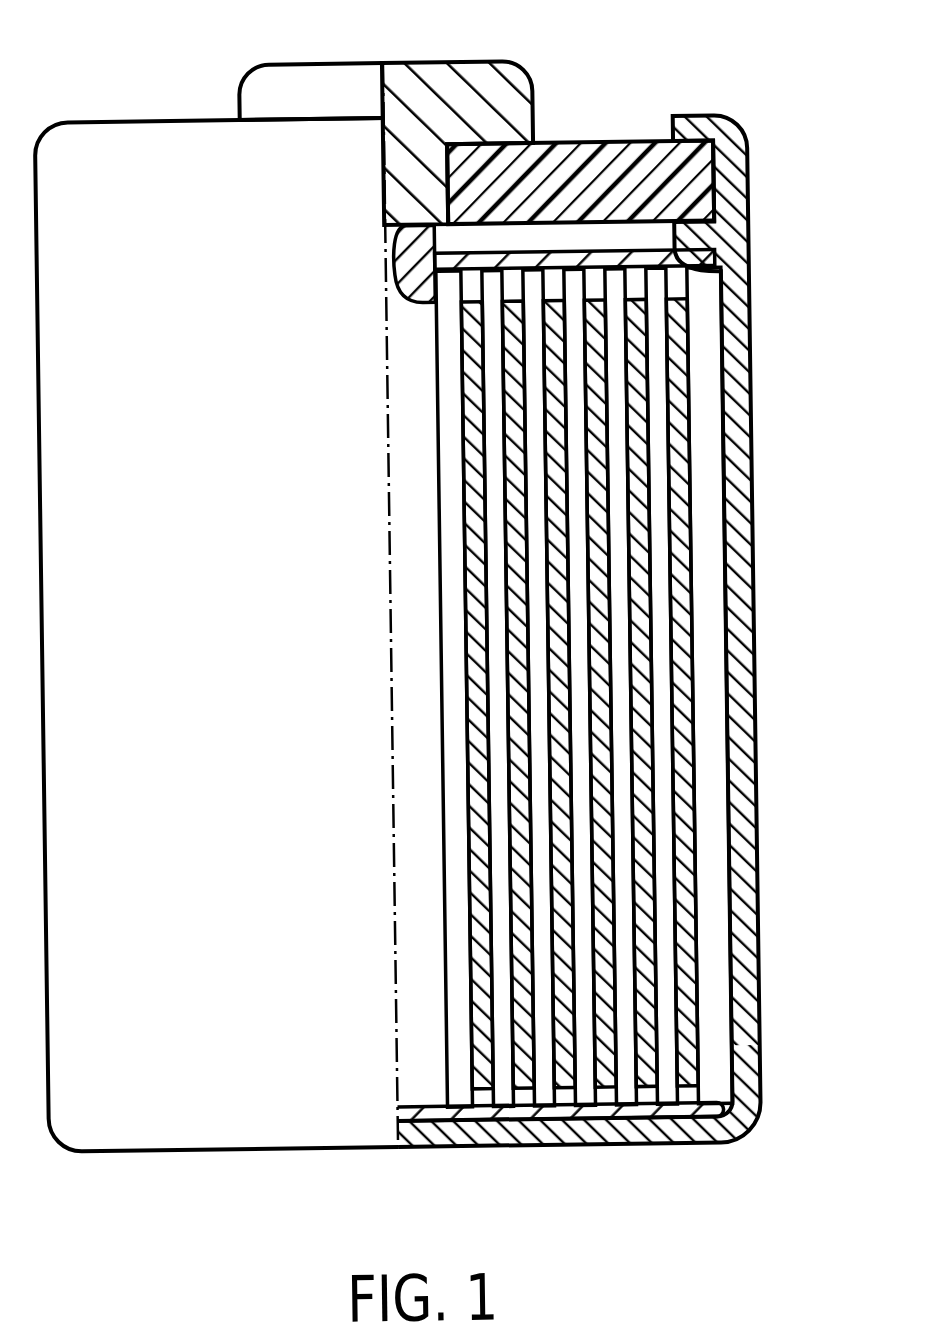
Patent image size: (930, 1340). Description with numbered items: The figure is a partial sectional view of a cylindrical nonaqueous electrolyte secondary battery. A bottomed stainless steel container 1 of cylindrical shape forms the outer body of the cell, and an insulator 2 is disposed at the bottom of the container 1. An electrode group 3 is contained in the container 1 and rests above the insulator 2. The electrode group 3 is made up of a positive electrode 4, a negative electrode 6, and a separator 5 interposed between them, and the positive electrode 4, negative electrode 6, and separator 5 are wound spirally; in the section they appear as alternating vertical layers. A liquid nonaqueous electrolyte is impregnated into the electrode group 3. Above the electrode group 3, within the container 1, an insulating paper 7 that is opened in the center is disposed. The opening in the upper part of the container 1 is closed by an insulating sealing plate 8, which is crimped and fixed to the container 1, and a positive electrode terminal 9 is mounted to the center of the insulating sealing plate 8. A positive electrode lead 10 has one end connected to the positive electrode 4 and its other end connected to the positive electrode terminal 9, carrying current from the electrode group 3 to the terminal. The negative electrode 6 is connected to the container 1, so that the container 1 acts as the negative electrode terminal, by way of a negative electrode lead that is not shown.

The container 1 is at (735, 1000).
The insulator 2 is at (650, 1121).
The electrode group 3 is at (656, 686).
The positive electrode 4 is at (643, 400).
The separator 5 is at (662, 464).
The negative electrode 6 is at (816, 379).
The insulating paper 7 is at (706, 262).
The insulating sealing plate 8 is at (632, 145).
The positive electrode terminal 9 is at (451, 63).
The positive electrode lead 10 is at (403, 271).